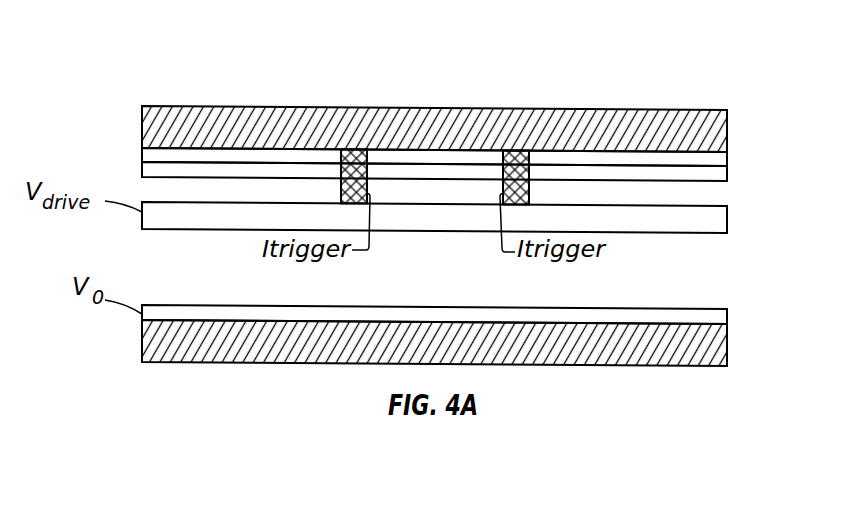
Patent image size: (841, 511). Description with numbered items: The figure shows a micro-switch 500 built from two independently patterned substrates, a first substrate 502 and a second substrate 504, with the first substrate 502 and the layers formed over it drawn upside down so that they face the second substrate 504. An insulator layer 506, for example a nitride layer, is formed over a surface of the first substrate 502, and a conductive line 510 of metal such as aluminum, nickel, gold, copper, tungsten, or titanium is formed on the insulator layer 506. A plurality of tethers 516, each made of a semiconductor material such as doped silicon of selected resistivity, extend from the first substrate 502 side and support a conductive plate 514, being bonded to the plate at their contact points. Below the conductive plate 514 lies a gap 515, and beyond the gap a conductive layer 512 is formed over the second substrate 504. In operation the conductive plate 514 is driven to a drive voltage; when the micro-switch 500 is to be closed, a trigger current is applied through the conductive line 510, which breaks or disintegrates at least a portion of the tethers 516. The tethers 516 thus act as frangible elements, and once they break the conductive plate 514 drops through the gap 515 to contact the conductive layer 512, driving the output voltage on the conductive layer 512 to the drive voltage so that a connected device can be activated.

The micro-switch 500 is at (690, 84).
The first substrate 502 is at (469, 129).
The second substrate 504 is at (469, 343).
The insulator layer 506 is at (469, 151).
The conductive line 510 is at (469, 180).
The conductive layer 512 is at (469, 311).
The conductive plate 514 is at (469, 225).
The gap 515 is at (755, 271).
The tethers 516 is at (356, 165).